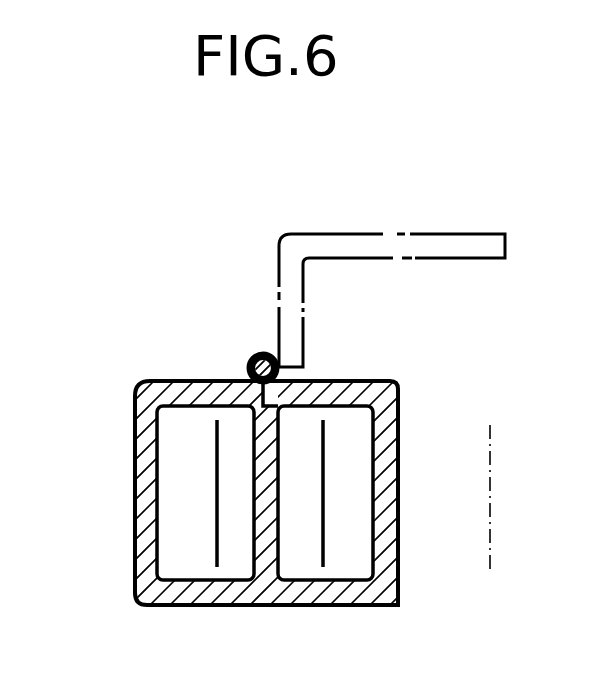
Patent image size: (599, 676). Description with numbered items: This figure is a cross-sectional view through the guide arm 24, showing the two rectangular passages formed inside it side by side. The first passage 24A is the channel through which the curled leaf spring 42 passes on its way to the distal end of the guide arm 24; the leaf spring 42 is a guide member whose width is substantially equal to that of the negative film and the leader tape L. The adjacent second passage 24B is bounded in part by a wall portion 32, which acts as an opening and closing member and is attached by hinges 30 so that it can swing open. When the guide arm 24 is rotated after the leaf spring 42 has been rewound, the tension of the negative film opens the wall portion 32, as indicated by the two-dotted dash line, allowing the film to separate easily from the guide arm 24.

The guide arm 24 is at (131, 364).
The first passage 24A is at (195, 459).
The second passage 24B is at (353, 552).
The hinges 30 is at (250, 361).
The wall portion 32 is at (322, 233).
The leaf spring 42 is at (215, 548).
The leader tape L is at (320, 537).